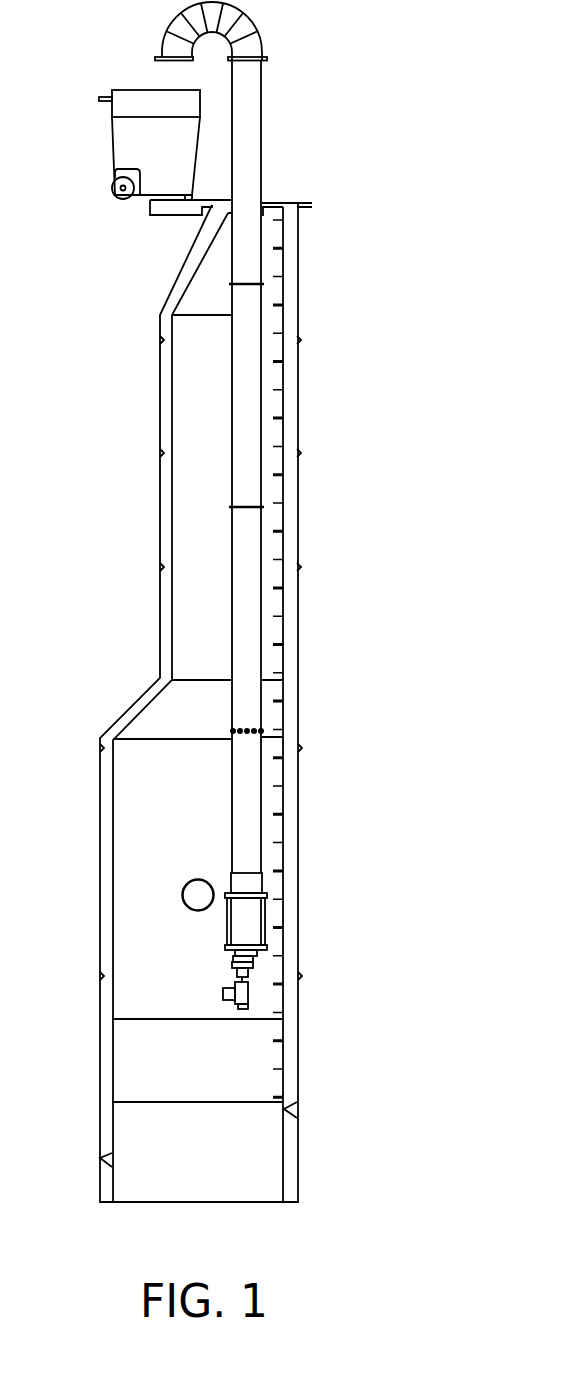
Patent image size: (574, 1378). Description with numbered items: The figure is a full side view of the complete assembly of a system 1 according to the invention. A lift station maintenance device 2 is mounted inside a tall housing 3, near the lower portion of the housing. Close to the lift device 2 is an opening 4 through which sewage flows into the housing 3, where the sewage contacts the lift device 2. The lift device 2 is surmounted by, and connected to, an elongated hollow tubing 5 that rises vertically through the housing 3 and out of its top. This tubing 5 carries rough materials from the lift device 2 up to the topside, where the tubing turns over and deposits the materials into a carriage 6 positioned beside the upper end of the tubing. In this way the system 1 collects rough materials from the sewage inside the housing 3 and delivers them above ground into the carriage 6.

The system 1 is at (247, 602).
The lift station maintenance device 2 is at (268, 914).
The housing 3 is at (127, 713).
The opening 4 is at (197, 893).
The elongated hollow tubing 5 is at (247, 552).
The carriage 6 is at (162, 160).